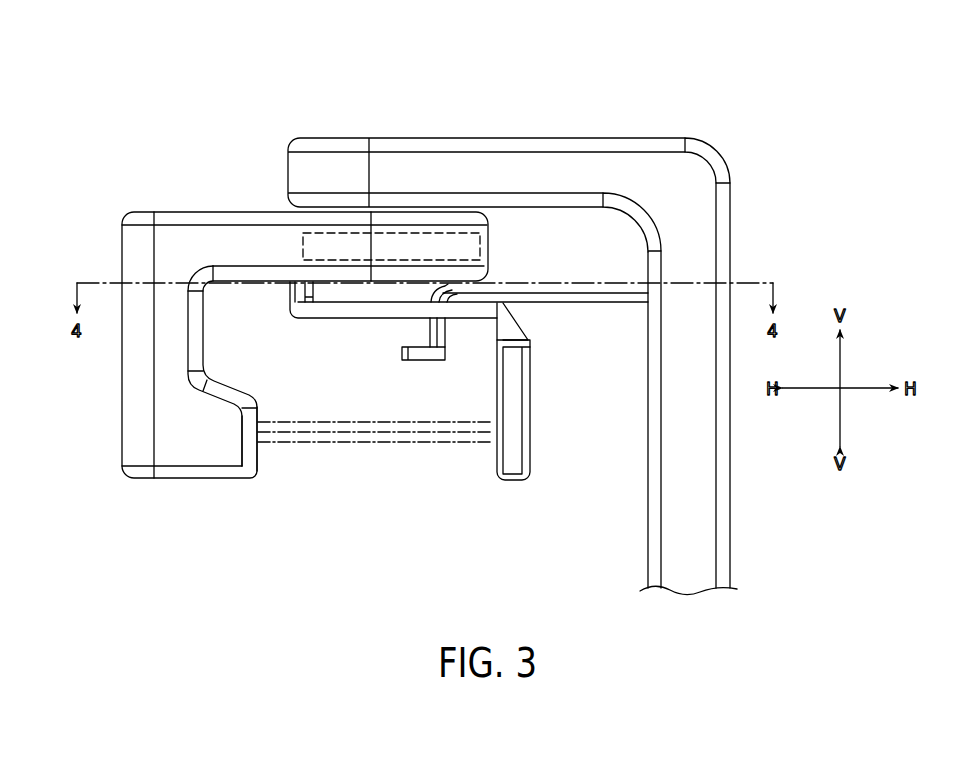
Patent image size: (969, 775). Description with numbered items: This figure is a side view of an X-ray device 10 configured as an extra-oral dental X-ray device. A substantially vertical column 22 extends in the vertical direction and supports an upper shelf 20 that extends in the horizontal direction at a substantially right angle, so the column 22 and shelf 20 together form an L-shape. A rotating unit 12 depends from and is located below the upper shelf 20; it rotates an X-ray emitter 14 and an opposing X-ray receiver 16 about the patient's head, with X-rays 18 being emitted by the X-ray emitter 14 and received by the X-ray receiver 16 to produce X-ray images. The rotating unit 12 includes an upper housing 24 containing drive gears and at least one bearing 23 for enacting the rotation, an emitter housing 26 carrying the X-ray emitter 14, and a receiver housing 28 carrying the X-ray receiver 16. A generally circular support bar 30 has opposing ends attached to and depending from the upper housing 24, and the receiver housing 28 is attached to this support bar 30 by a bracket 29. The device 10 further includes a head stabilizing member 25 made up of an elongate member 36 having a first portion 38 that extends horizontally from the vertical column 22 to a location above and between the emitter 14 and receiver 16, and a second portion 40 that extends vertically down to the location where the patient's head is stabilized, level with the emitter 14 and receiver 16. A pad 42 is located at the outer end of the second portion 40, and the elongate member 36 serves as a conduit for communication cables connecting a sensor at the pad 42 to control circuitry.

The X-ray device 10 is at (720, 67).
The rotating unit 12 is at (103, 183).
The X-ray emitter 14 is at (260, 438).
The X-ray receiver 16 is at (498, 457).
The X-rays 18 is at (370, 447).
The upper shelf 20 is at (460, 145).
The substantially vertical column 22 is at (723, 473).
The bearing 23 is at (302, 241).
The upper housing 24 is at (222, 217).
The head stabilizing member 25 is at (565, 267).
The emitter housing 26 is at (130, 373).
The receiver housing 28 is at (527, 405).
The bracket 29 is at (508, 332).
The support bar 30 is at (318, 312).
The elongate member 36 is at (600, 293).
The first portion 38 is at (507, 290).
The second portion 40 is at (443, 332).
The pad 42 is at (423, 356).